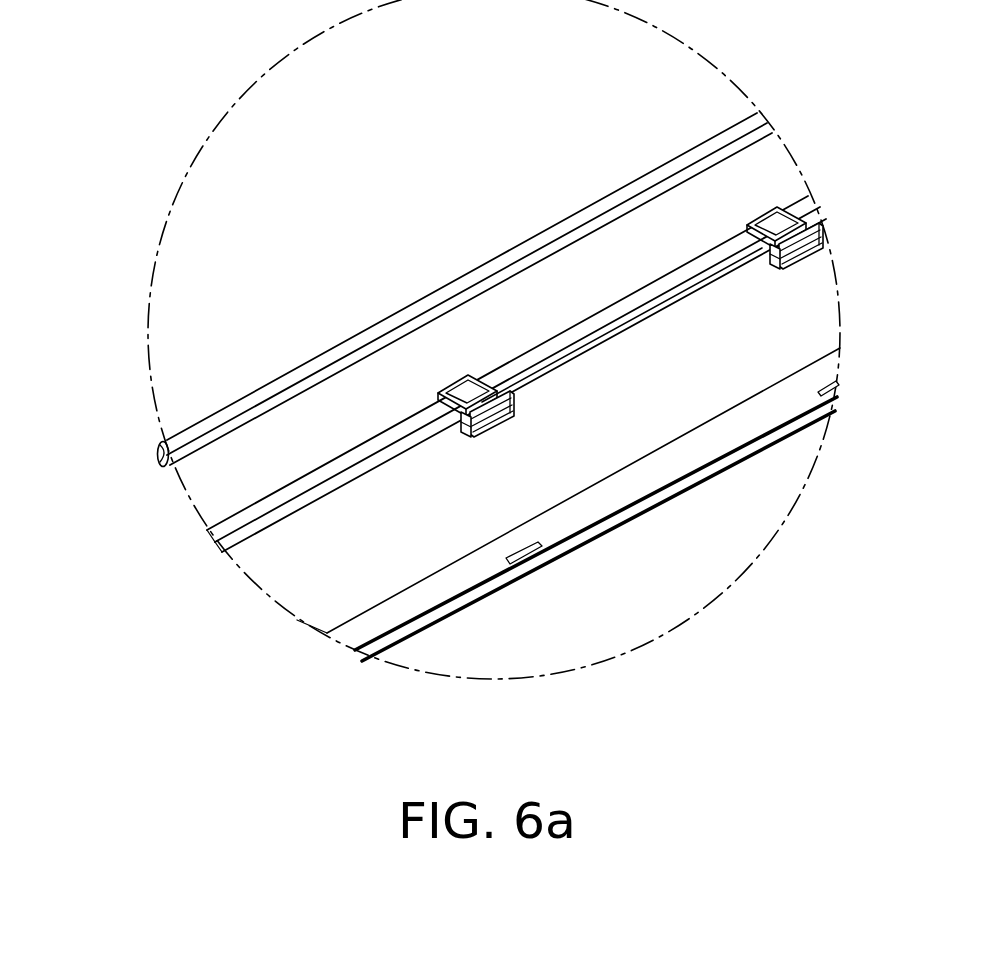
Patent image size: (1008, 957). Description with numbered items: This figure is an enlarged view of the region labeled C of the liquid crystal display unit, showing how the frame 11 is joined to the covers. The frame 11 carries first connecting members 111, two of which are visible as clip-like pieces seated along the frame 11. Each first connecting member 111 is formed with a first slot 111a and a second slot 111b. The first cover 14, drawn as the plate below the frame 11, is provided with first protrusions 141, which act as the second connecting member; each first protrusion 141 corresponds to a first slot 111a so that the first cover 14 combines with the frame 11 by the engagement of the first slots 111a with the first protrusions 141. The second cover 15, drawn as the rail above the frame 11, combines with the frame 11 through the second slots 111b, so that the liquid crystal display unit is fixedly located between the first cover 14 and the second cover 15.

The enlarged detail region C is at (830, 195).
The frame 11 is at (584, 352).
The first connecting member 111 is at (630, 349).
The first slot 111a is at (506, 425).
The second slot 111b is at (472, 431).
The first cover 14 is at (356, 650).
The first protrusion 141 is at (516, 552).
The second cover 15 is at (158, 462).